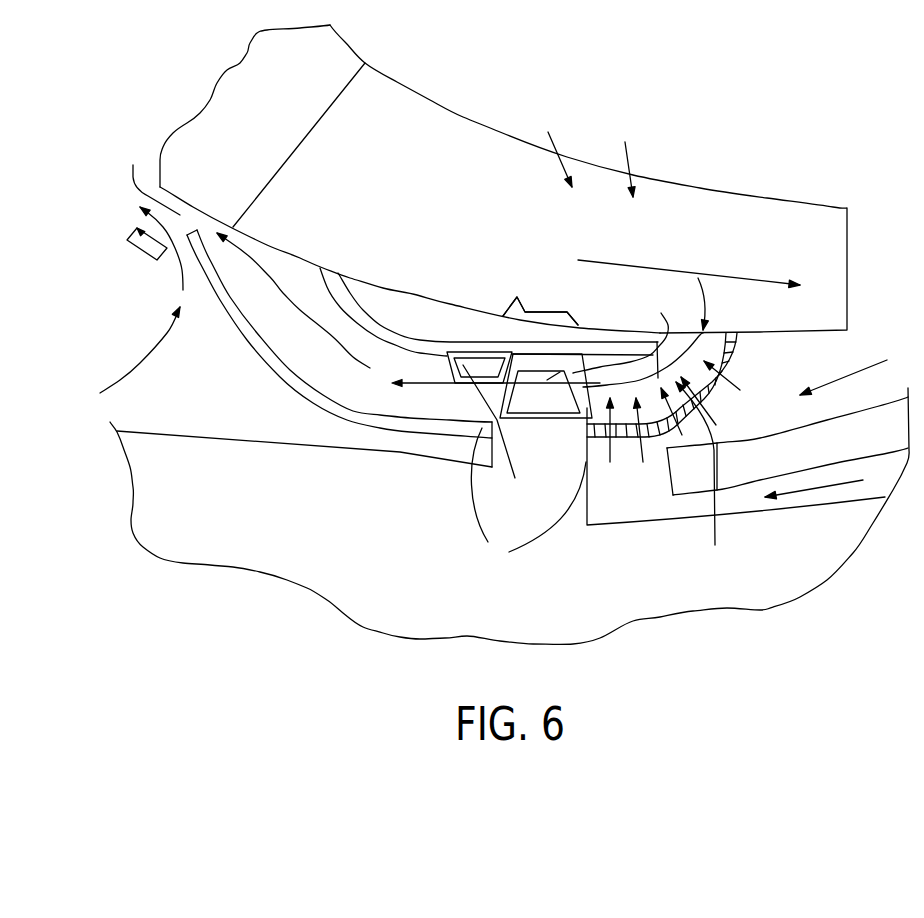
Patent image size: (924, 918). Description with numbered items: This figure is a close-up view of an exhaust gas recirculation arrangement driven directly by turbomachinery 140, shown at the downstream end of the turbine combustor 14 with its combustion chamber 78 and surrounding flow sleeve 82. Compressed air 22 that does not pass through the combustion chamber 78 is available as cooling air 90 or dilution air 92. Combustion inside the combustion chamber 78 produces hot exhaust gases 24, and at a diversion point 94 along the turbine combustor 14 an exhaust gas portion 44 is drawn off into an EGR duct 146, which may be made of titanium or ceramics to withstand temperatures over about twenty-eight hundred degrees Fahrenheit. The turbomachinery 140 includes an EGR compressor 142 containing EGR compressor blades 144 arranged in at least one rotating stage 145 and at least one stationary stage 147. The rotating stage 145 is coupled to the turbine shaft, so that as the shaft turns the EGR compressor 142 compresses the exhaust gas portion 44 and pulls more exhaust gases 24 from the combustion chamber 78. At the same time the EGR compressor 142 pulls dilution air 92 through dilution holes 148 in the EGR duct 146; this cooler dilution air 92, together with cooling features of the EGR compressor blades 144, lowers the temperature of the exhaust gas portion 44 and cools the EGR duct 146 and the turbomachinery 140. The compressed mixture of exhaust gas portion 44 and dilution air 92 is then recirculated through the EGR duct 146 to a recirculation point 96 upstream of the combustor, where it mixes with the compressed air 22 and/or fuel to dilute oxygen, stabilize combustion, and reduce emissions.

The turbine combustor 14 is at (314, 96).
The combustion chamber 78 is at (238, 172).
The recirculation point 96 is at (150, 177).
The flow sleeve 82 is at (153, 248).
The exhaust gas portion 44 is at (268, 278).
The compressed air 22 is at (150, 366).
The turbomachinery 140 is at (485, 290).
The EGR compressor 142 is at (515, 297).
The cooling air 90 is at (407, 354).
The rotating stage 145 is at (547, 380).
The exhaust gases 24 is at (667, 268).
The diversion point 94 is at (689, 367).
The dilution air 92 is at (563, 148).
The stationary stage 147 is at (462, 363).
The EGR compressor blades 144 is at (490, 395).
The EGR duct 146 is at (526, 517).
The dilution holes 148 is at (645, 462).